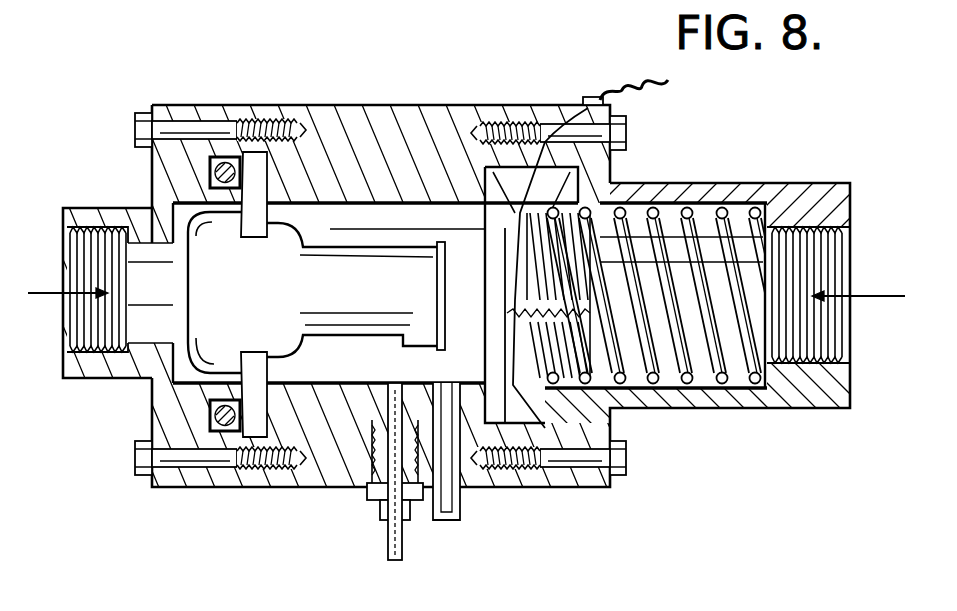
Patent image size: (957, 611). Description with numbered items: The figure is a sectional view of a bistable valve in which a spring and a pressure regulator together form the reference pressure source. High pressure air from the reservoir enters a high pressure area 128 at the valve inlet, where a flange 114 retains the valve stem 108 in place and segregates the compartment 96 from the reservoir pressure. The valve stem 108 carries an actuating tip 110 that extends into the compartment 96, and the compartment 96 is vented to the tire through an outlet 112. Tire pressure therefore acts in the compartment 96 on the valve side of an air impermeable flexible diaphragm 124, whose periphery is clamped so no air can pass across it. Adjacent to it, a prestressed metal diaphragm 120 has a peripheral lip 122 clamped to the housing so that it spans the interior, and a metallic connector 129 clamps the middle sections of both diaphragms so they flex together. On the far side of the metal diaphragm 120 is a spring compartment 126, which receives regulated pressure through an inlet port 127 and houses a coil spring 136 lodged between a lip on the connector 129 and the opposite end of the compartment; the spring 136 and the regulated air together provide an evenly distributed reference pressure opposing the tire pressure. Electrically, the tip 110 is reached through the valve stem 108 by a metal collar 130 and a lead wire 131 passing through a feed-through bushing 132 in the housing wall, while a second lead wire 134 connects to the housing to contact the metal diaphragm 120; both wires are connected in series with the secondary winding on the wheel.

The compartment 96 is at (363, 215).
The valve stem 108 is at (345, 347).
The actuating tip 110 is at (505, 308).
The outlet 112 is at (480, 512).
The flange 114 is at (197, 358).
The prestressed metal diaphragm 120 is at (692, 312).
The peripheral lip 122 is at (628, 455).
The air impermeable flexible diaphragm 124 is at (513, 213).
The spring compartment 126 is at (681, 258).
The inlet port 127 is at (815, 335).
The high pressure area 128 is at (82, 232).
The metallic connector 129 is at (617, 203).
The metal collar 130 is at (283, 367).
The lead wire 131 is at (405, 554).
The feed-through bushing 132 is at (365, 490).
The lead wire 134 is at (622, 88).
The coil spring 136 is at (707, 203).